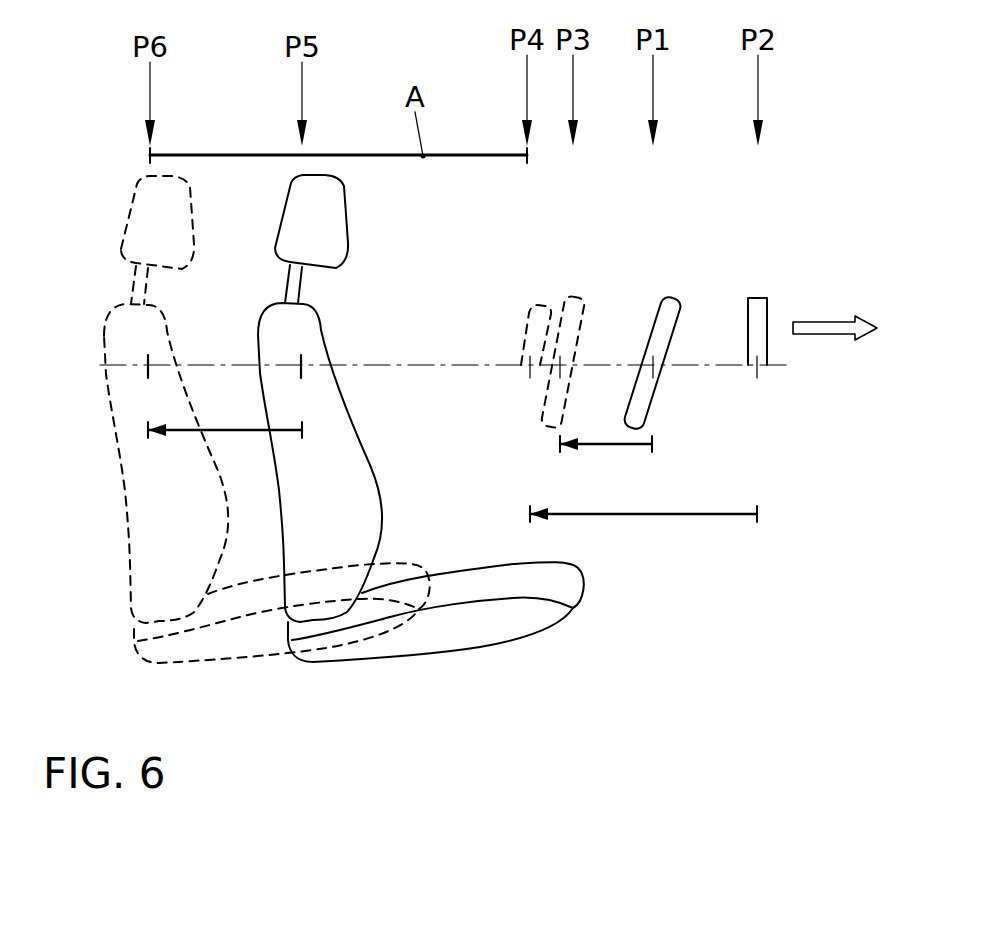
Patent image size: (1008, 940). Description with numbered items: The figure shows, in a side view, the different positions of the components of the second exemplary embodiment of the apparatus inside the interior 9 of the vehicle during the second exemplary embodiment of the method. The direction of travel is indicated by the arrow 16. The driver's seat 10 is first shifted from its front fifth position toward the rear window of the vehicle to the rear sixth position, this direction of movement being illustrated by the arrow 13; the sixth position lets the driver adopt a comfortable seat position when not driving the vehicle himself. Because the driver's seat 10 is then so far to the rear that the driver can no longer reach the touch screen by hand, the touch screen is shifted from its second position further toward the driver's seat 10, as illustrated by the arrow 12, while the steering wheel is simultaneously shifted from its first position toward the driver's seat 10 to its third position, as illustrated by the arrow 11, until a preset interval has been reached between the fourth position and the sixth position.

The interior 9 is at (423, 417).
The driver's seat 10 is at (266, 630).
The arrow 11 is at (611, 444).
The arrow 12 is at (673, 514).
The arrow 13 is at (244, 430).
The arrow 16 is at (825, 332).